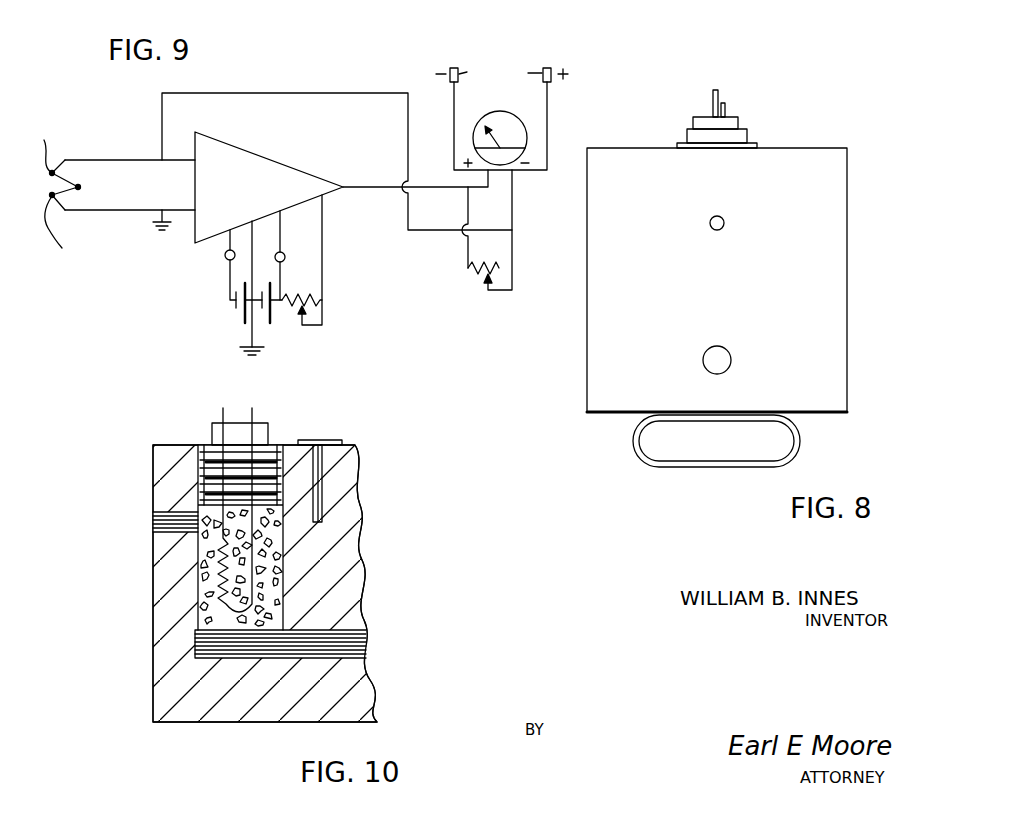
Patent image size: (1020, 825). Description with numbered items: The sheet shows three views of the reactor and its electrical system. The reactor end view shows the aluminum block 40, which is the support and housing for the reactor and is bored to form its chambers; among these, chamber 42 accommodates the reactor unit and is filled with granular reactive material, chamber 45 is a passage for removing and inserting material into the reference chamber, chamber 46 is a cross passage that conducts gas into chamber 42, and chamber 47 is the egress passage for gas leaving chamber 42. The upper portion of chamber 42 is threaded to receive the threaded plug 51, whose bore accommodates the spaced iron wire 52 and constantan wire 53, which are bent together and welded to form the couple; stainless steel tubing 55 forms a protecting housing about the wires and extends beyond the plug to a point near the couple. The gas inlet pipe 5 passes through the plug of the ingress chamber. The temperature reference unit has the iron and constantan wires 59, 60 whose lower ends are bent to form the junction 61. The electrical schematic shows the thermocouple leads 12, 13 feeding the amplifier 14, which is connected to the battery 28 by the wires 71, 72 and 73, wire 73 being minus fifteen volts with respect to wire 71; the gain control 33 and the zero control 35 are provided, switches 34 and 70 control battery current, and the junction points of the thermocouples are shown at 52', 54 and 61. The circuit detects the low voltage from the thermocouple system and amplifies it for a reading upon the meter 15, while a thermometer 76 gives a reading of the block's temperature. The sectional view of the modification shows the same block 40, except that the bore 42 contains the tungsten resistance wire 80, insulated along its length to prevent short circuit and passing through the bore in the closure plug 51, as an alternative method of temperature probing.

In FIG. 8, the gas inlet pipe 5 is at (712, 106).
In FIG. 9, the input lead 12 is at (98, 211).
In FIG. 9, the input lead 13 is at (130, 152).
In FIG. 9, the amplifier 14 is at (250, 201).
In FIG. 9, the meter 15 is at (502, 174).
In FIG. 9, the battery 28 is at (221, 319).
In FIG. 9, the gain control 33 is at (468, 268).
In FIG. 9, the switch 34 is at (225, 256).
In FIG. 9, the zero control 35 is at (324, 310).
In FIG. 8, the aluminum block 40 is at (688, 305).
In FIG. 10, the aluminum block 40 is at (365, 572).
In FIG. 10, the chamber 42 is at (286, 600).
In FIG. 8, the chamber 45 is at (585, 414).
In FIG. 8, the chamber 46 is at (731, 360).
In FIG. 10, the chamber 46 is at (168, 656).
In FIG. 8, the chamber 47 is at (724, 220).
In FIG. 10, the chamber 47 is at (172, 530).
In FIG. 8, the threaded plug 51 is at (686, 136).
In FIG. 10, the threaded plug 51 is at (199, 444).
In FIG. 9, the iron wire 52 is at (70, 219).
In FIG. 8, the iron wire 52 is at (748, 83).
In FIG. 9, the thermocouple junction point 52' is at (112, 187).
In FIG. 9, the constantan wire 53 is at (66, 194).
In FIG. 9, the thermocouple junction point 54 is at (68, 233).
In FIG. 8, the stainless steel tubing 55 is at (738, 119).
In FIG. 9, the iron wire 59 is at (68, 176).
In FIG. 9, the constantan wire 60 is at (63, 149).
In FIG. 8, the constantan wire 60 is at (713, 453).
In FIG. 9, the junction 61 is at (61, 144).
In FIG. 9, the switch 70 is at (283, 262).
In FIG. 9, the wire 71 is at (251, 240).
In FIG. 9, the wire 72 is at (281, 239).
In FIG. 9, the wire 73 is at (228, 288).
In FIG. 10, the thermometer 76 is at (340, 440).
In FIG. 10, the tungsten resistance wire 80 is at (260, 559).